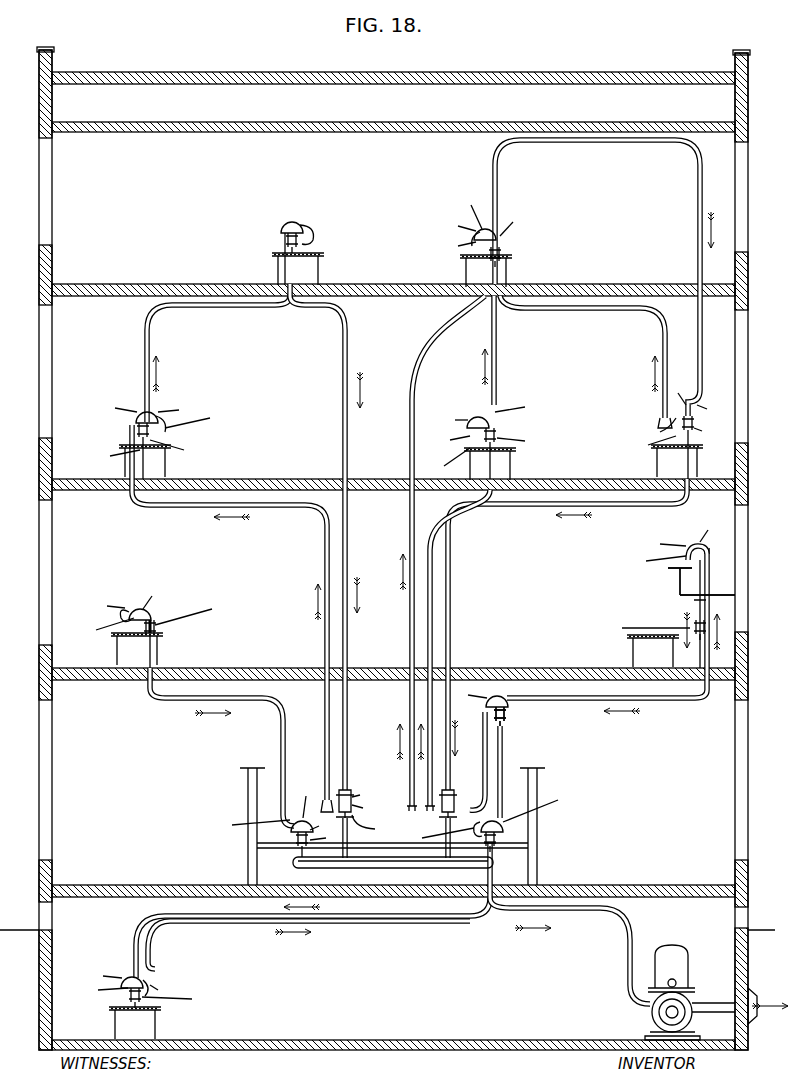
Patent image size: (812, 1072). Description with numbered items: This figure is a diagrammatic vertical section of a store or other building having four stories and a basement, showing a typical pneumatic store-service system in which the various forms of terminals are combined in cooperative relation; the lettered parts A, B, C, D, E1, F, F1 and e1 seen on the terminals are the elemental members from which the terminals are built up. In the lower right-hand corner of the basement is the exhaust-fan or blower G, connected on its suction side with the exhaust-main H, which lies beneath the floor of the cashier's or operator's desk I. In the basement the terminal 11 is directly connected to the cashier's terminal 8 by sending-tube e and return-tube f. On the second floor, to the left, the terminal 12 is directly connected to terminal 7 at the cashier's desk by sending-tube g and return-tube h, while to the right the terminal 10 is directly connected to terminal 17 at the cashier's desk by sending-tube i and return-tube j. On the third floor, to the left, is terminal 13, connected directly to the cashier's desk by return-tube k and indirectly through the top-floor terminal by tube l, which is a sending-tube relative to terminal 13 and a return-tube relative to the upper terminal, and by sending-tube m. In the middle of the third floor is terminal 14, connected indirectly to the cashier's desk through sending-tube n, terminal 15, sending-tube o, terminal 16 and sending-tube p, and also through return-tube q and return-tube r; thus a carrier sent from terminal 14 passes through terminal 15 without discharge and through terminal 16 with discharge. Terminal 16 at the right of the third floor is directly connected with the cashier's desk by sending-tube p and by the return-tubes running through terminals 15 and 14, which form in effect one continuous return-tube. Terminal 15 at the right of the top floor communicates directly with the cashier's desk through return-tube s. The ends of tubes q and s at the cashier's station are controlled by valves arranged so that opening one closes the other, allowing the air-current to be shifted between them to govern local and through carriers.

The terminal 7 is at (344, 819).
The cashier's terminal 8 is at (489, 821).
The terminal 10 is at (672, 592).
The terminal 11 is at (145, 1004).
The terminal 12 is at (154, 610).
The terminal 13 is at (160, 440).
The terminal 14 is at (484, 439).
The terminal 15 is at (505, 246).
The terminal 16 is at (672, 429).
The terminal 17 is at (497, 707).
The hood A is at (283, 226).
The elbow pipe B is at (305, 227).
The valve C is at (300, 250).
The stand D is at (284, 250).
The bracket E1 is at (698, 600).
The valve F is at (494, 712).
The pipe F1 is at (504, 800).
The exhaust-fan or blower G is at (650, 1012).
The exhaust-main H is at (300, 868).
The cashier's or operator's desk I is at (250, 798).
The sending-tube e is at (135, 918).
The valve e1 is at (485, 842).
The return-tube f is at (155, 928).
The sending-tube g is at (148, 650).
The return-tube h is at (156, 618).
The sending-tube i is at (647, 703).
The return-tube j is at (710, 570).
The return-tube k is at (130, 435).
The tube l is at (150, 332).
The sending-tube m is at (343, 374).
The sending-tube n is at (491, 333).
The sending-tube o is at (494, 185).
The sending-tube p is at (622, 508).
The return-tube q is at (428, 572).
The return-tube r is at (598, 310).
The return-tube s is at (410, 410).